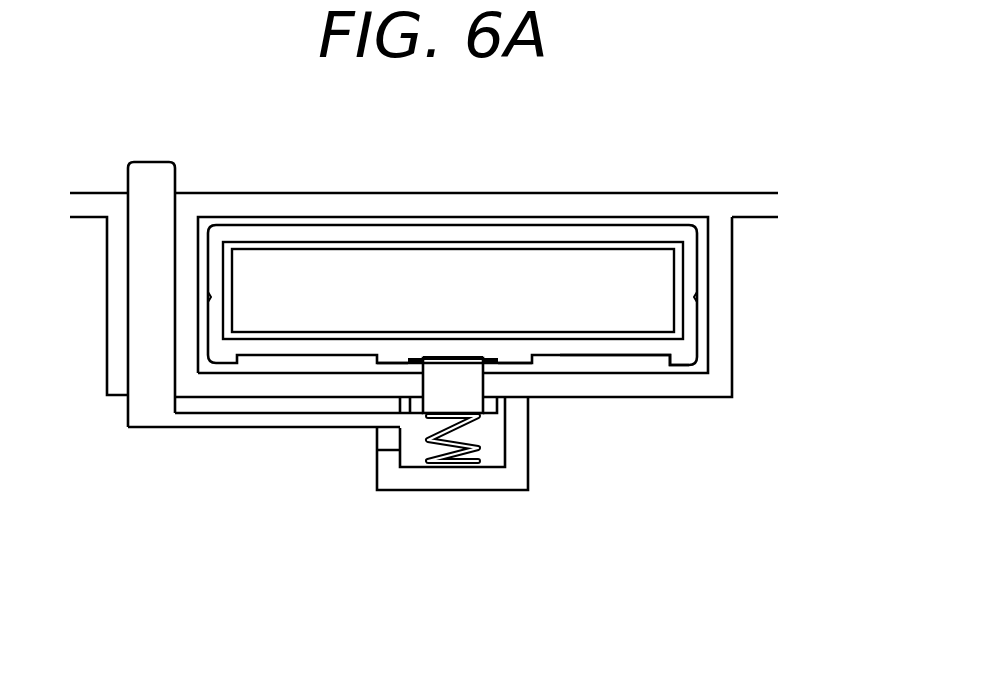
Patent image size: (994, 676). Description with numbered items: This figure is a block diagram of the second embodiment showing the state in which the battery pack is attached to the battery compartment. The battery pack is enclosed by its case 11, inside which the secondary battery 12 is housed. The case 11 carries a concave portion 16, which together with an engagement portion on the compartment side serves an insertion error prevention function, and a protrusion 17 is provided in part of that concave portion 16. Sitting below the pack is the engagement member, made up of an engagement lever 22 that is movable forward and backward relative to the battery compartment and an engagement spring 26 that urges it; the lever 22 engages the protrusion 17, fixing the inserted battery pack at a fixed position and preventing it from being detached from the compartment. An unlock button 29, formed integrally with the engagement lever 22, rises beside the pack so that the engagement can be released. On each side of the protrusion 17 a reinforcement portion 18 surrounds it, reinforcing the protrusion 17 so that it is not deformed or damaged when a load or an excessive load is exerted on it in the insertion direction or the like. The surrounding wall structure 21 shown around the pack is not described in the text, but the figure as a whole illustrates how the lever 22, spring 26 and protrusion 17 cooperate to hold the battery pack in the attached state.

The case 11 is at (222, 235).
The secondary battery 12 is at (390, 258).
The concave portion 16 is at (617, 350).
The protrusion 17 is at (417, 358).
The reinforcement portion 18 is at (513, 358).
The housing 21 is at (703, 204).
The engagement lever 22 is at (463, 385).
The engagement spring 26 is at (462, 450).
The unlock button 29 is at (152, 173).